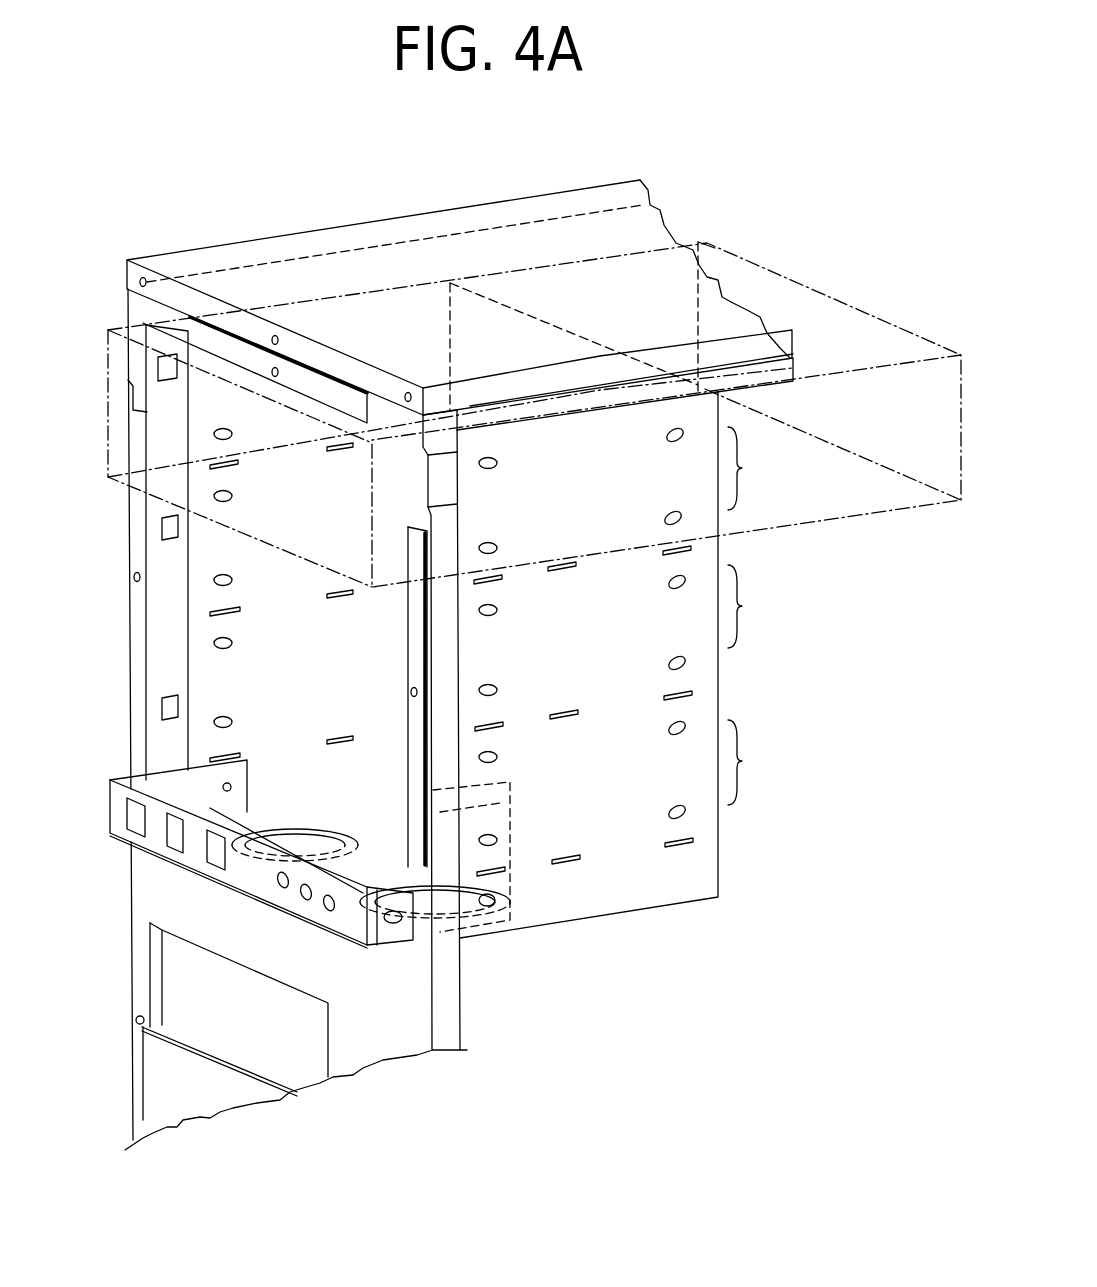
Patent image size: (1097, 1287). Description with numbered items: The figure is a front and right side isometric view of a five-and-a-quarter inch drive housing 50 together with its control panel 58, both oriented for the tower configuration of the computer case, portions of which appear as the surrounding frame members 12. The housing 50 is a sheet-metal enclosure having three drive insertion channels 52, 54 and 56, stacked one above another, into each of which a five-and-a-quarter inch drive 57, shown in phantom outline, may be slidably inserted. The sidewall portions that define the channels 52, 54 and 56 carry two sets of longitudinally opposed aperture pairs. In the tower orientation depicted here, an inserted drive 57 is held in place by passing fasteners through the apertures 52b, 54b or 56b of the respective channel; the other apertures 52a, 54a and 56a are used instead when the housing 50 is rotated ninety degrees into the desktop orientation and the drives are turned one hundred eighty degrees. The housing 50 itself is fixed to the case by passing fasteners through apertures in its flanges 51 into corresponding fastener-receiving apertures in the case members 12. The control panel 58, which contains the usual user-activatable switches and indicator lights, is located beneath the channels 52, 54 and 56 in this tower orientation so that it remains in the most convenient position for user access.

The cabinet frame 12 is at (322, 233).
The 5¼" drive housing 50 is at (687, 905).
The flanges 51 is at (297, 373).
The channel 52 is at (750, 468).
The apertures 52a is at (233, 434).
The apertures 52b is at (498, 548).
The channel 54 is at (752, 606).
The apertures 54a is at (233, 496).
The apertures 54b is at (233, 580).
The channel 56 is at (751, 762).
The apertures 56a is at (233, 643).
The apertures 56b is at (233, 722).
The 5¼" drive 57 is at (760, 285).
The control panel 58 is at (297, 843).